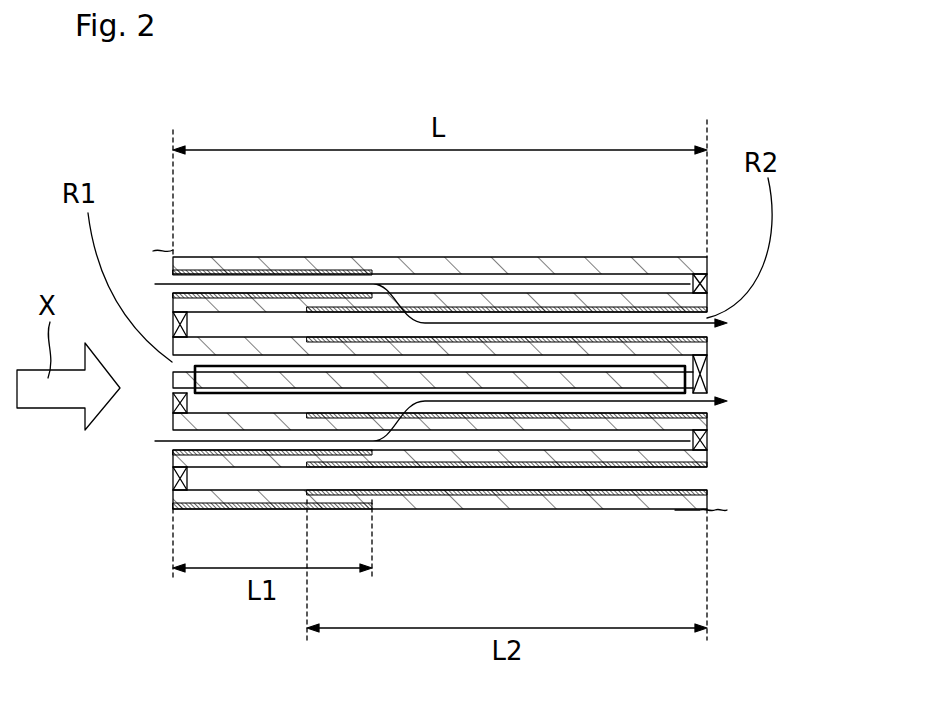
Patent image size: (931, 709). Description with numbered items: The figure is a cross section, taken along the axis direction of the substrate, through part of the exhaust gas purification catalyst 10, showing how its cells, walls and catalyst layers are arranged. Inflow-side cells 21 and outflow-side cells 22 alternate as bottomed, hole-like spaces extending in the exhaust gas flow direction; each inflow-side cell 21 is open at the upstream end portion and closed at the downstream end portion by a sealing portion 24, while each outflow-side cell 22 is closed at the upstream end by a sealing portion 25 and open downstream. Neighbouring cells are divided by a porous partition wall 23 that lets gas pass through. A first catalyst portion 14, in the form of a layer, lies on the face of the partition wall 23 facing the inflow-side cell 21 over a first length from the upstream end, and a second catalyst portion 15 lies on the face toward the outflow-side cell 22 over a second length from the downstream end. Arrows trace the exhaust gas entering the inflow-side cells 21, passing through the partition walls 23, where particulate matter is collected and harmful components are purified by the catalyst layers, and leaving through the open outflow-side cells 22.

The exhaust gas purification catalyst 10 is at (690, 102).
The first catalyst portion 14 is at (238, 455).
The second catalyst portion 15 is at (498, 465).
The inflow-side cell 21 is at (638, 290).
The outflow-side cell 22 is at (290, 328).
The partition wall 23 is at (500, 257).
The sealing portion 24 is at (708, 437).
The sealing portion 25 is at (172, 478).